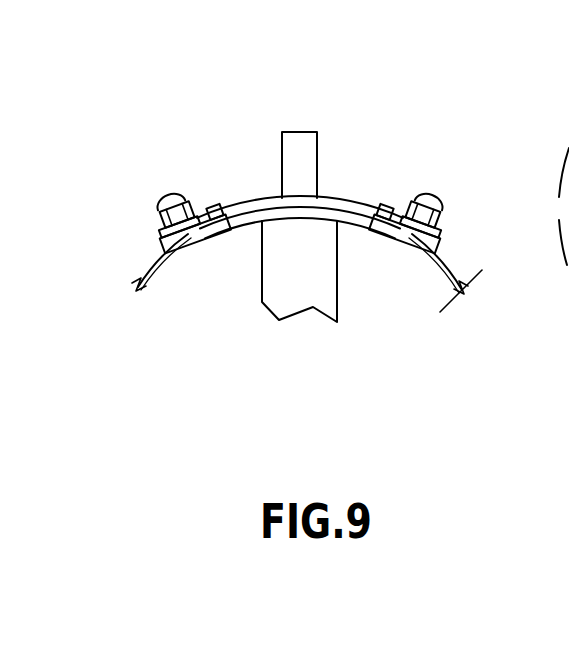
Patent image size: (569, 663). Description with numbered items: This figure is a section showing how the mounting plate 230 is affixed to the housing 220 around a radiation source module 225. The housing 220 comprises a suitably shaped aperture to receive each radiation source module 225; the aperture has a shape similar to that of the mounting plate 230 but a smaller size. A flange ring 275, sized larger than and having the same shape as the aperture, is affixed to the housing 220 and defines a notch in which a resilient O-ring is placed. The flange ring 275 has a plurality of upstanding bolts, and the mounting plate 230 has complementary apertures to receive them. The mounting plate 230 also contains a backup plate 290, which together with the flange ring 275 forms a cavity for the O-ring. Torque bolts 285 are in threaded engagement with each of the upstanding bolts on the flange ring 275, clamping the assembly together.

The housing 220 is at (162, 308).
The radiation source module 225 is at (281, 331).
The mounting plate 230 is at (252, 197).
The flange ring 275 is at (179, 245).
The torque bolts 285 is at (160, 200).
The backup plate 290 is at (344, 207).